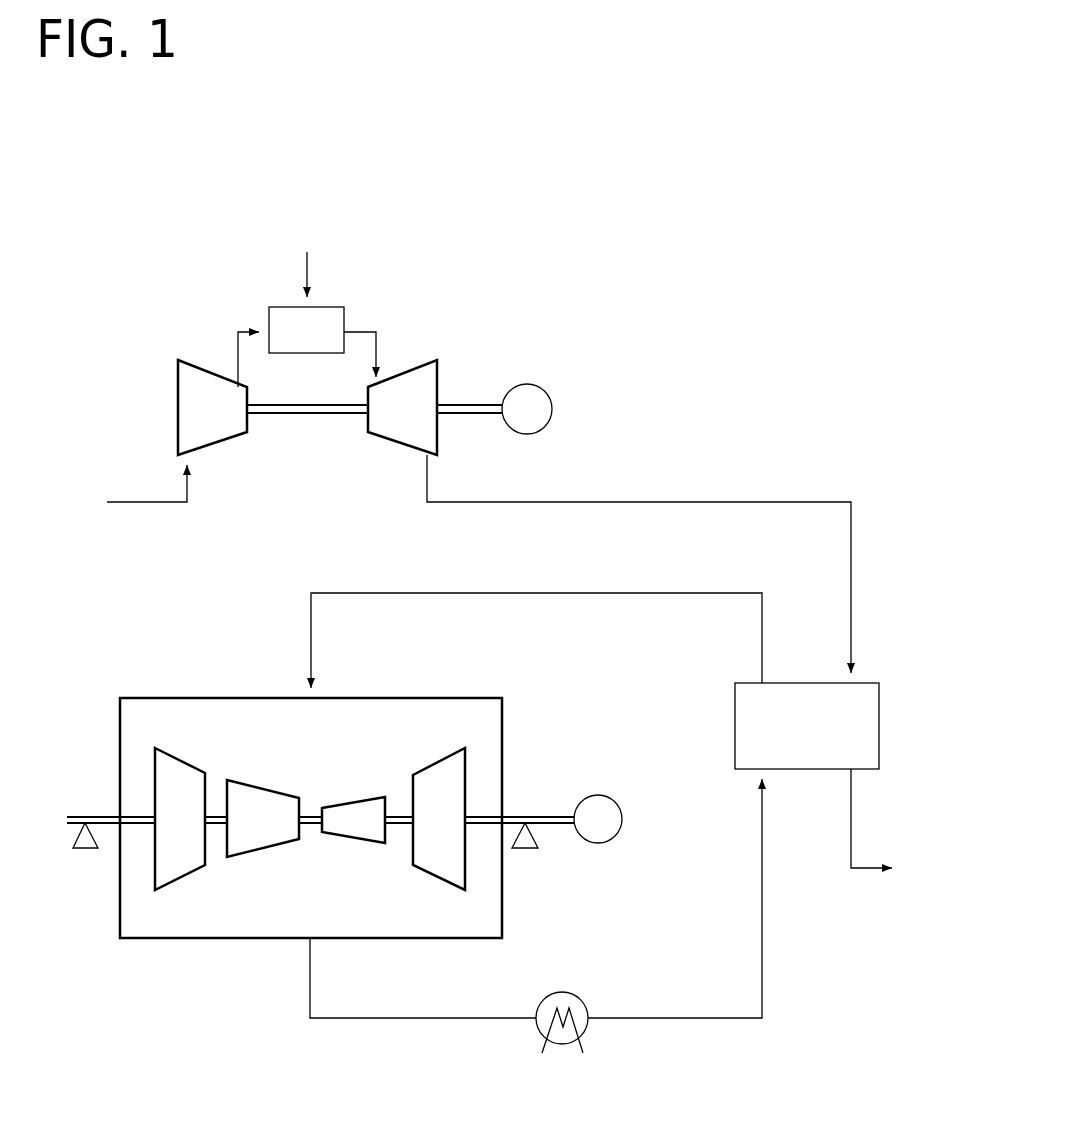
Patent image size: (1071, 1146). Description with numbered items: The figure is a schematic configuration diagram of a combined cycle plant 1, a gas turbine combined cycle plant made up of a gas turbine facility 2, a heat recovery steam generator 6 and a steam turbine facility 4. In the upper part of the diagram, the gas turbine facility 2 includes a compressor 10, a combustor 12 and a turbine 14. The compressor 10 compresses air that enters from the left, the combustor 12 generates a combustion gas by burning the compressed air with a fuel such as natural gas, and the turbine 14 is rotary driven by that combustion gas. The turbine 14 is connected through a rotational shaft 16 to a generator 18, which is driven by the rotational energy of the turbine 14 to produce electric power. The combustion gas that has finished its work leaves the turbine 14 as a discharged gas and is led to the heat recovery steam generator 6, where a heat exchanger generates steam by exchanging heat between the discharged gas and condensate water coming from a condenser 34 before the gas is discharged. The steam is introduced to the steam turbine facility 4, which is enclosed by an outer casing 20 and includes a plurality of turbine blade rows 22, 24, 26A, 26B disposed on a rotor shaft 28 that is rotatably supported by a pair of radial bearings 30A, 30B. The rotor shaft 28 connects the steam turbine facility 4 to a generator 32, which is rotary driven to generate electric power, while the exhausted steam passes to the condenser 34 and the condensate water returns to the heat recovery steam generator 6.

The combined cycle plant 1 is at (808, 218).
The gas turbine facility 2 is at (515, 247).
The steam turbine facility 4 is at (595, 665).
The heat recovery steam generator 6 is at (879, 718).
The compressor 10 is at (197, 363).
The combustor 12 is at (334, 301).
The turbine 14 is at (412, 368).
The rotational shaft 16 is at (311, 416).
The generator 18 is at (533, 385).
The outer casing 20 is at (418, 698).
The turbine blade row 22 is at (360, 800).
The turbine blade row 24 is at (270, 789).
The turbine blade row 26A is at (187, 764).
The turbine blade row 26B is at (441, 762).
The rotor shaft 28 is at (312, 842).
The radial bearing 30A is at (85, 852).
The radial bearing 30B is at (529, 852).
The generator 32 is at (607, 794).
The condenser 34 is at (576, 992).